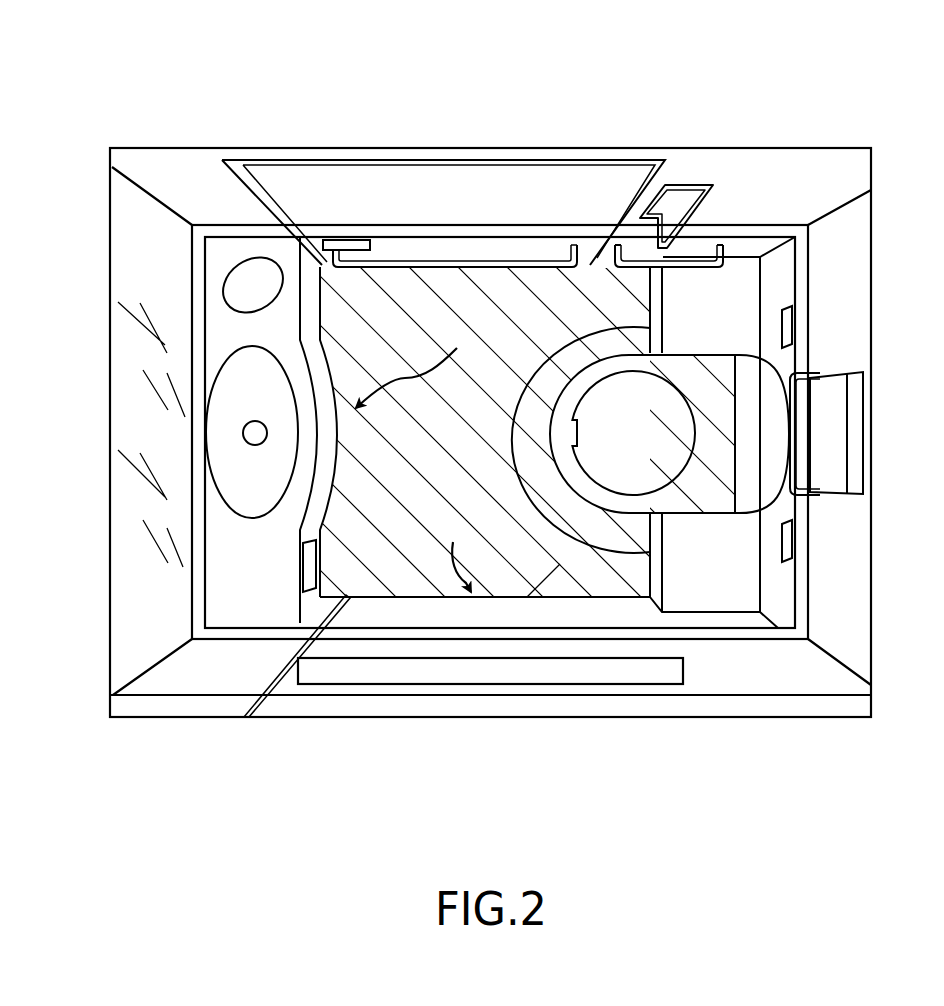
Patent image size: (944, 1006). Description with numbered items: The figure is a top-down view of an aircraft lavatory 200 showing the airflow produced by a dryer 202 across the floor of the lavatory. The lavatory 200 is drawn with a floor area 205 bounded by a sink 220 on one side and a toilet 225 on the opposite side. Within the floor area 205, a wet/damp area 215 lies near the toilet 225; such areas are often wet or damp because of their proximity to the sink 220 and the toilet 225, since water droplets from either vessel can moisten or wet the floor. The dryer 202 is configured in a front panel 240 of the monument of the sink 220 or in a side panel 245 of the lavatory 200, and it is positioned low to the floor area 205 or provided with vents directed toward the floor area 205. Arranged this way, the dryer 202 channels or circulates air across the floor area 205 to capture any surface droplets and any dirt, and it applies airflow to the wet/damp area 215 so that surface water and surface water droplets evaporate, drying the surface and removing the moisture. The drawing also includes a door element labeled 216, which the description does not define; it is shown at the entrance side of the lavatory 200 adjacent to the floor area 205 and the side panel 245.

The lavatory 200 is at (776, 104).
The dryer 202 is at (320, 468).
The floor area 205 is at (397, 306).
The wet/damp area 215 is at (557, 582).
The door 216 is at (343, 567).
The sink 220 is at (230, 382).
The toilet 225 is at (677, 440).
The front panel 240 is at (415, 362).
The side panel 245 is at (485, 554).